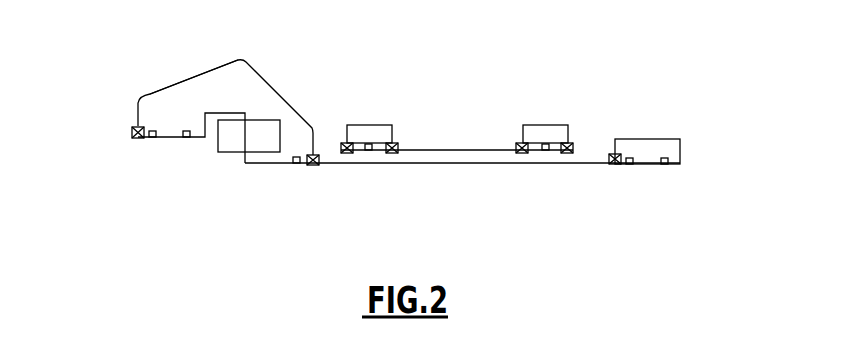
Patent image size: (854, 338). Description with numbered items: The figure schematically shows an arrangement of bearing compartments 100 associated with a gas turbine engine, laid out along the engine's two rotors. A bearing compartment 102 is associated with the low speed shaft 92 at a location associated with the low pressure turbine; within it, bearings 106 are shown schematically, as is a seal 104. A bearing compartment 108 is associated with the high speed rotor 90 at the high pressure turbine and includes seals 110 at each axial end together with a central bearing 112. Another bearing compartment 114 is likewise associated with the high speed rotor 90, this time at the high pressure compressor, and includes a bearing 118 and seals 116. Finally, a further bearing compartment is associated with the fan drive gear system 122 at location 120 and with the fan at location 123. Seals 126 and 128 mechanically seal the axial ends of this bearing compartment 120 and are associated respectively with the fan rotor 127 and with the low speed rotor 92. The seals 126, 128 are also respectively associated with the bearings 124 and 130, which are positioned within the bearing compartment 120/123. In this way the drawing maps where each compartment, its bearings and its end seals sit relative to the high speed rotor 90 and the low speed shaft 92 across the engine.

The arrangement of bearing compartments 100 is at (610, 83).
The bearing compartment 102 is at (648, 147).
The seal 104 is at (615, 165).
The bearings 106 is at (664, 165).
The bearing compartment 108 is at (543, 130).
The seals 110 is at (567, 153).
The central bearing 112 is at (545, 151).
The bearing compartment 114 is at (363, 133).
The seals 116 is at (392, 153).
The bearing 118 is at (369, 151).
The bearing compartment location 120 is at (267, 105).
The fan drive gear system 122 is at (238, 152).
The fan bearing compartment location 123 is at (172, 110).
The bearing 124 is at (296, 164).
The seal 126 is at (311, 166).
The fan rotor 127 is at (213, 111).
The seal 128 is at (136, 139).
The bearing 130 is at (168, 181).
The high speed rotor 90 is at (478, 150).
The low speed shaft 92 is at (483, 164).